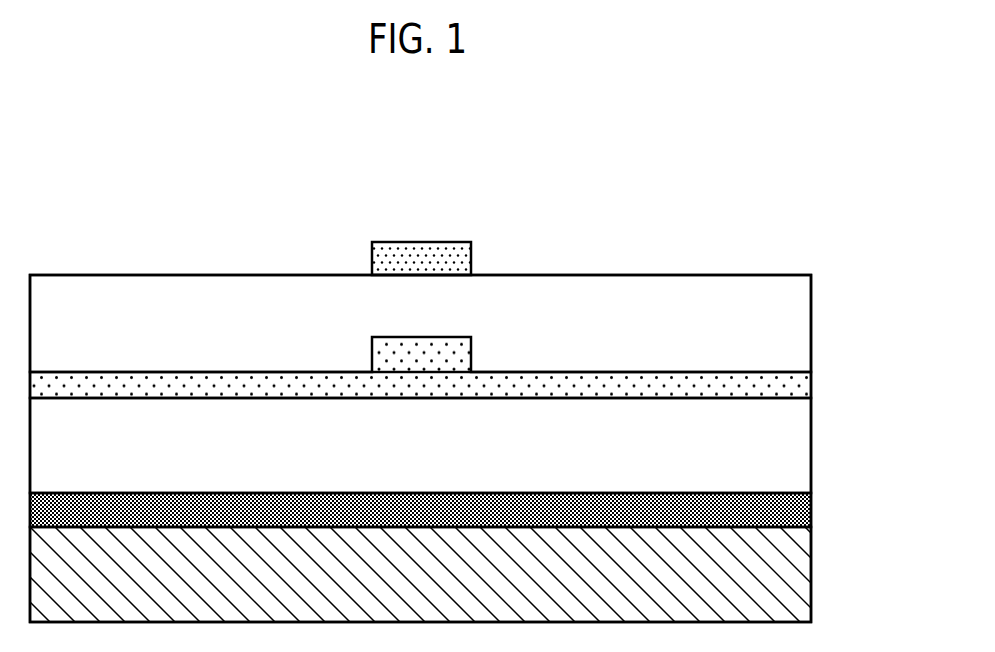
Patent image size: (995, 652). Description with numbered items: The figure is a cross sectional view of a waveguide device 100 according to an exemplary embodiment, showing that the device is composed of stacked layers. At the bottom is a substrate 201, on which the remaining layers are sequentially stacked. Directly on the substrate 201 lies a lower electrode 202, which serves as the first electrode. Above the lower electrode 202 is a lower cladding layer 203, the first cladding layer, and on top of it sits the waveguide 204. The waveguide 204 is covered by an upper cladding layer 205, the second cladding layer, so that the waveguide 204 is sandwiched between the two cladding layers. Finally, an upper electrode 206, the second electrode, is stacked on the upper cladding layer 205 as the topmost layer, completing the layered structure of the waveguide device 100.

The waveguide device 100 is at (268, 172).
The substrate 201 is at (796, 572).
The lower electrode 202 is at (812, 502).
The lower cladding layer 203 is at (796, 442).
The waveguide 204 is at (812, 382).
The upper cladding layer 205 is at (797, 321).
The upper electrode 206 is at (443, 242).